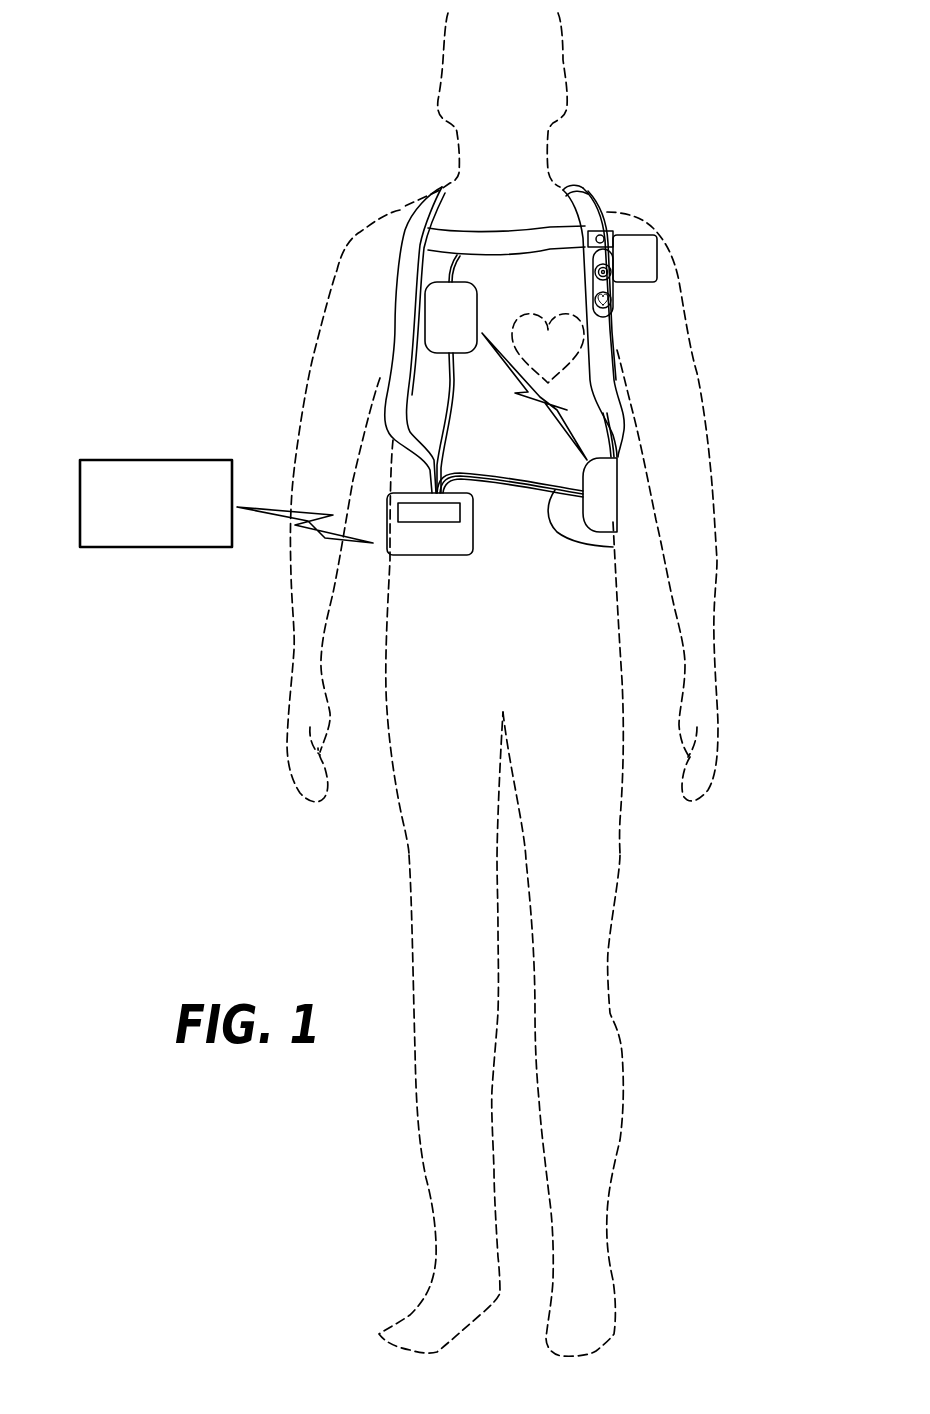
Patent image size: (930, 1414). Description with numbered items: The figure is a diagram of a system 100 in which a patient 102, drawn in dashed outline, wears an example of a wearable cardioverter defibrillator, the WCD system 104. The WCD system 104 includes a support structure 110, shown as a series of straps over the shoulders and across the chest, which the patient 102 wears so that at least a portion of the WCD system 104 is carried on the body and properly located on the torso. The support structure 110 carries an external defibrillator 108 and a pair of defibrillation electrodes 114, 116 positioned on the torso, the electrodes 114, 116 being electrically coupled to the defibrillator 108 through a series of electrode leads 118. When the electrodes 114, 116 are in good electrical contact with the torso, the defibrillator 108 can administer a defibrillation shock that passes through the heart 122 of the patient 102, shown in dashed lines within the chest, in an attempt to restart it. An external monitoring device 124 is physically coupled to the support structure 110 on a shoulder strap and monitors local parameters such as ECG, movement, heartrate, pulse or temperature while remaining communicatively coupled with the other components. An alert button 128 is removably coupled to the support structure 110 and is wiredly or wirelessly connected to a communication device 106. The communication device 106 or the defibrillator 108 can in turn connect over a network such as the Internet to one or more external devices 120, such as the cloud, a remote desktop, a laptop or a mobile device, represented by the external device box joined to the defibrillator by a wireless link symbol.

The system 100 is at (664, 55).
The patient 102 is at (441, 62).
The WCD system 104 is at (548, 226).
The communication device 106 is at (402, 533).
The external defibrillator 108 is at (385, 532).
The support structure 110 is at (612, 343).
The defibrillation electrode 114 is at (432, 312).
The defibrillation electrode 116 is at (610, 480).
The electrode leads 118 is at (443, 378).
The external devices 120 is at (403, 252).
The heart 122 is at (617, 315).
The external monitoring device 124 is at (637, 237).
The alert button 128 is at (612, 287).